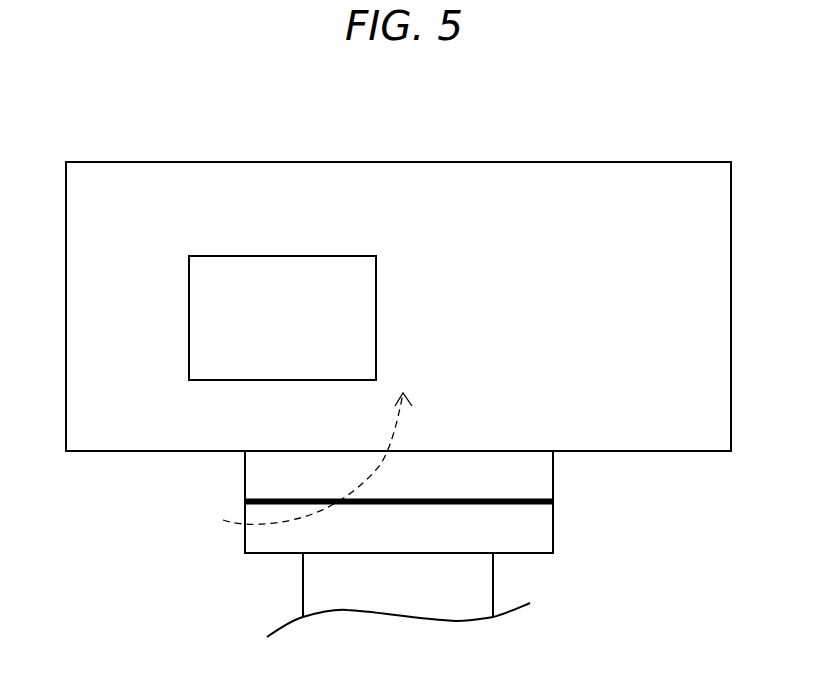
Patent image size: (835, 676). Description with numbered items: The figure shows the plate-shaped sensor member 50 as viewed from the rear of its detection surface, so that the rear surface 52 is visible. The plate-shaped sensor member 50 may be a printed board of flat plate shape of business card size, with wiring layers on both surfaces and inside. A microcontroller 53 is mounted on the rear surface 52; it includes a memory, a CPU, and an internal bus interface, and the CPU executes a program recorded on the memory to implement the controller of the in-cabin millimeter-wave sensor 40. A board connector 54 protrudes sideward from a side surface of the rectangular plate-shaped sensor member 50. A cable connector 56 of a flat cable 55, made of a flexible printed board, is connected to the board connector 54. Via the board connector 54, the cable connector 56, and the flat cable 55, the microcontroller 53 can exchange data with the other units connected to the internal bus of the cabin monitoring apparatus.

The in-cabin millimeter-wave sensor 40 is at (352, 142).
The plate-shaped sensor member 50 is at (480, 170).
The microcontroller 53 is at (189, 307).
The rear surface 52 is at (302, 458).
The board connector 54 is at (547, 486).
The cable connector 56 is at (535, 537).
The flat cable 55 is at (480, 582).